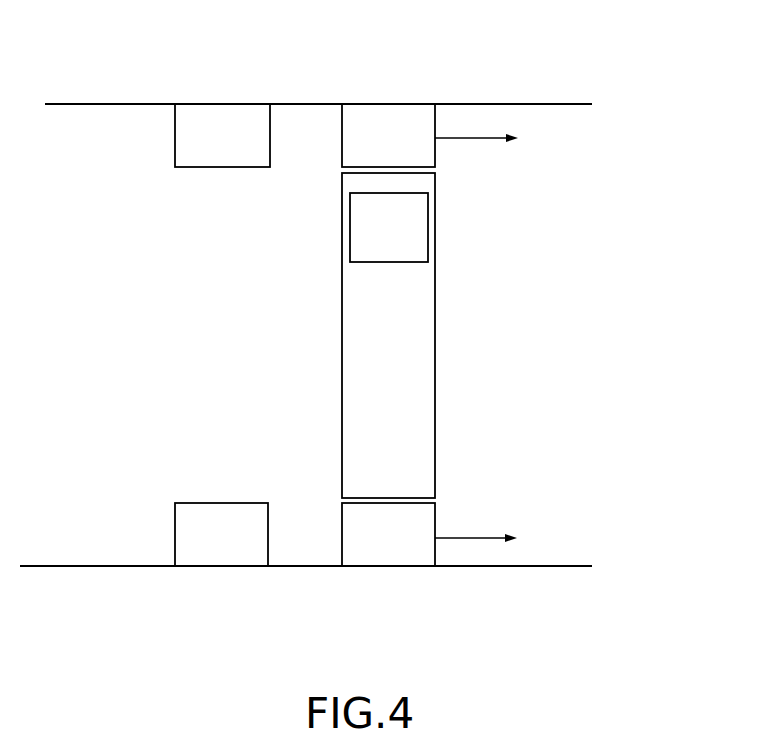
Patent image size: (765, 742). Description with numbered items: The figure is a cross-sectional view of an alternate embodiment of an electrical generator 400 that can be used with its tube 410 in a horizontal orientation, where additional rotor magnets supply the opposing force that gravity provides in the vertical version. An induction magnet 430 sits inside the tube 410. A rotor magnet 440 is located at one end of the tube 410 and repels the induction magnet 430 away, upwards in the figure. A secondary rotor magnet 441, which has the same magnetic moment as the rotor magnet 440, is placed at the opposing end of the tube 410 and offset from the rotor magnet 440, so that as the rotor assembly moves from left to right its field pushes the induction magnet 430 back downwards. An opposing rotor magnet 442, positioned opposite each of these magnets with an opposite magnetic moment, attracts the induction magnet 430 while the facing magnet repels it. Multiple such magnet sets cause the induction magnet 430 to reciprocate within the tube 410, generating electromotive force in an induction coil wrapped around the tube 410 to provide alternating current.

The electrical generator 400 is at (587, 304).
The tube 410 is at (435, 390).
The induction magnet 430 is at (412, 228).
The rotor magnet 440 is at (415, 521).
The secondary rotor magnet 441 is at (270, 127).
The opposing rotor magnet 442 is at (435, 124).